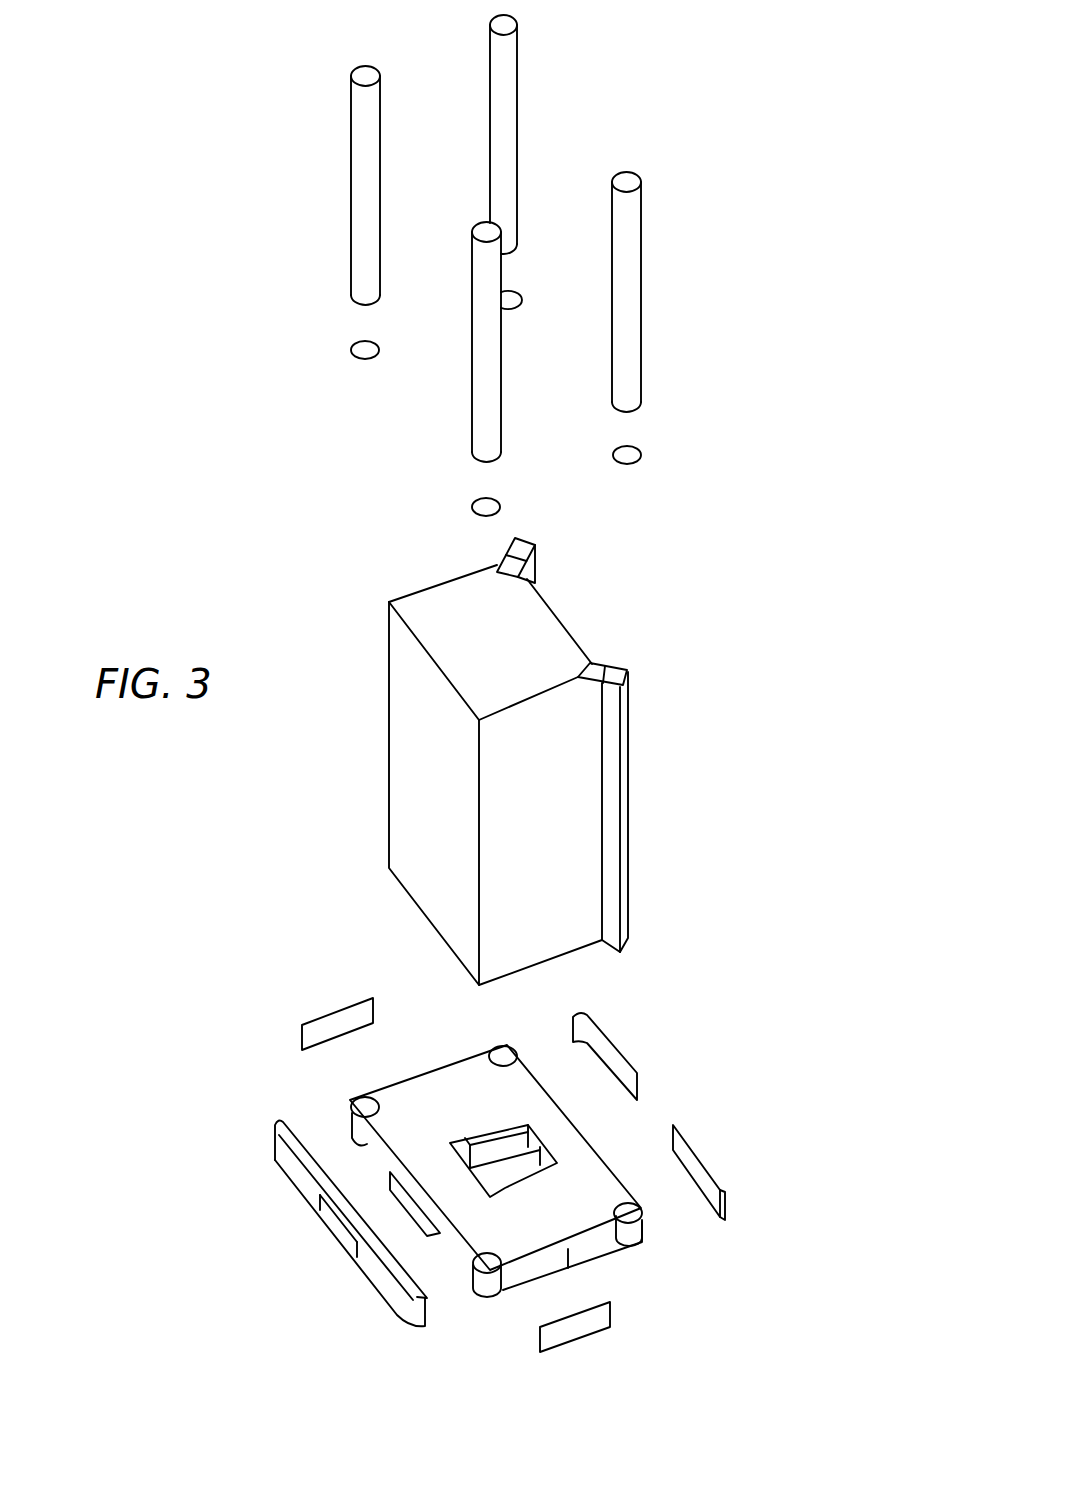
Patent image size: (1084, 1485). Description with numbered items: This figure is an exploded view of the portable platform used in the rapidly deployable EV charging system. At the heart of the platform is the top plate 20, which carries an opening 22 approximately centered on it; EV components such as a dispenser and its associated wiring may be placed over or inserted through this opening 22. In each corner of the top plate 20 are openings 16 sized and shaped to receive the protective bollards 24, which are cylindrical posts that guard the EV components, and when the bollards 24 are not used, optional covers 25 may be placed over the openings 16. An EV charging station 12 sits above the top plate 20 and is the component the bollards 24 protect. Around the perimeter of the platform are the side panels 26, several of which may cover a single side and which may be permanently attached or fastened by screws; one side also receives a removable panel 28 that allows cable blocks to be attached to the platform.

The EV charging station 12 is at (542, 630).
The openings 16 is at (365, 1106).
The top plate 20 is at (470, 1114).
The opening 22 is at (532, 1163).
The protective bollards 24 is at (351, 155).
The covers 25 is at (363, 348).
The side panels 26 is at (335, 1012).
The removable panel 28 is at (345, 1238).